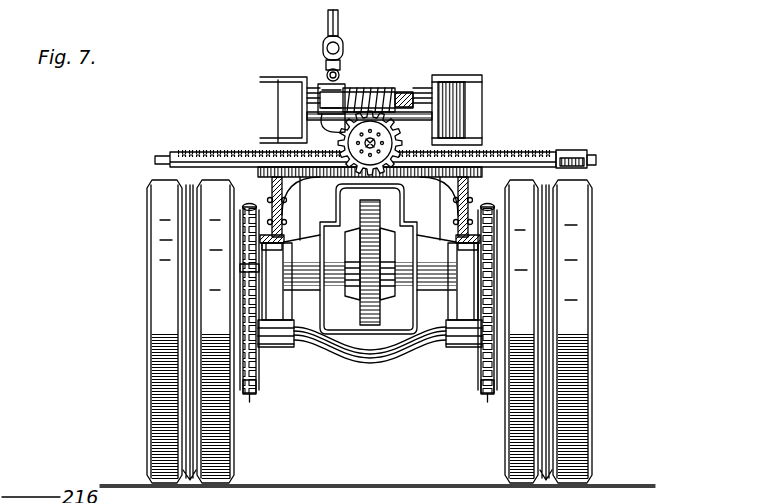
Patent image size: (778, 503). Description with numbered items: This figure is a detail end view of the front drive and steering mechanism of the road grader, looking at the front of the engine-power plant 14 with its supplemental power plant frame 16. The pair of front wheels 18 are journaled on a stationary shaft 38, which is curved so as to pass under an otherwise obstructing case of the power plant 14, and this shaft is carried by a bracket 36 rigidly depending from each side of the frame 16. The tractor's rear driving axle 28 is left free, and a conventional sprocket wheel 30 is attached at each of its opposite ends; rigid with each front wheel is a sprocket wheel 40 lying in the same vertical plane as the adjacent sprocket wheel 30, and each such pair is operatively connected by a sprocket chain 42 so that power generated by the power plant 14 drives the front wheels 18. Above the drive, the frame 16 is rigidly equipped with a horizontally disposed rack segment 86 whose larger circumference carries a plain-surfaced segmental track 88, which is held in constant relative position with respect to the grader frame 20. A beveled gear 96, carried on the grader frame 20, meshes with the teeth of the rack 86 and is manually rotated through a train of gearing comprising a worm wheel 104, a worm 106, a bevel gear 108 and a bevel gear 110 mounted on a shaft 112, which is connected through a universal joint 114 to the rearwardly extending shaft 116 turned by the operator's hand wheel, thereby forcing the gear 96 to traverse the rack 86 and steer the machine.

The engine-power plant 14 is at (418, 322).
The power plant frame 16 is at (283, 213).
The front wheels 18 is at (160, 295).
The grader frame 20 is at (290, 98).
The rear driving axle 28 is at (242, 268).
The sprocket wheel 30 is at (245, 204).
The bracket 36 is at (272, 355).
The stationary shaft 38 is at (372, 362).
The sprocket wheel 40 is at (249, 402).
The sprocket chain 42 is at (246, 300).
The rack segment 86 is at (550, 152).
The segmental track 88 is at (585, 160).
The beveled gear 96 is at (335, 177).
The worm wheel 104 is at (388, 165).
The worm 106 is at (392, 86).
The bevel gear 108 is at (340, 118).
The bevel gear 110 is at (320, 95).
The shaft 112 is at (340, 72).
The universal joint 114 is at (343, 45).
The shaft 116 is at (338, 16).